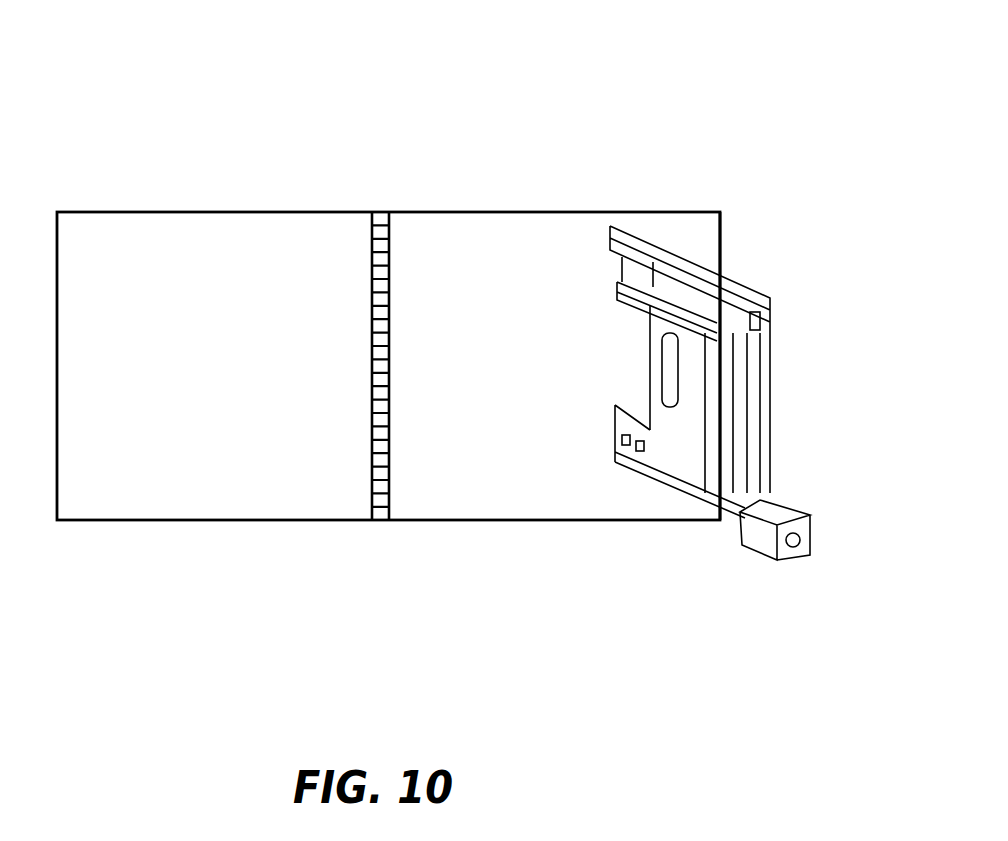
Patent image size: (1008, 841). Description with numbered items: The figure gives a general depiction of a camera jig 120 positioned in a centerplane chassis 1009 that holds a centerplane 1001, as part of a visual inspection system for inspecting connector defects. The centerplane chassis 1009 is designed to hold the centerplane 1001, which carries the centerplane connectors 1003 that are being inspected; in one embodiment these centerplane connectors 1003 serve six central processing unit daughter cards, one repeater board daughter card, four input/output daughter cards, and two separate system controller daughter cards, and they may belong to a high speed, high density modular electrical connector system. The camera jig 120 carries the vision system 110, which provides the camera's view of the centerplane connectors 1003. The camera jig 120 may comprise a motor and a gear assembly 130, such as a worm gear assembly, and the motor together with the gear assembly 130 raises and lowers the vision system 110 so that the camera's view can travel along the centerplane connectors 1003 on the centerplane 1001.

The centerplane 1001 is at (373, 255).
The centerplane connectors 1003 is at (388, 230).
The centerplane chassis 1009 is at (662, 210).
The vision system 110 is at (618, 230).
The camera jig 120 is at (775, 378).
The gear assembly 130 is at (707, 520).